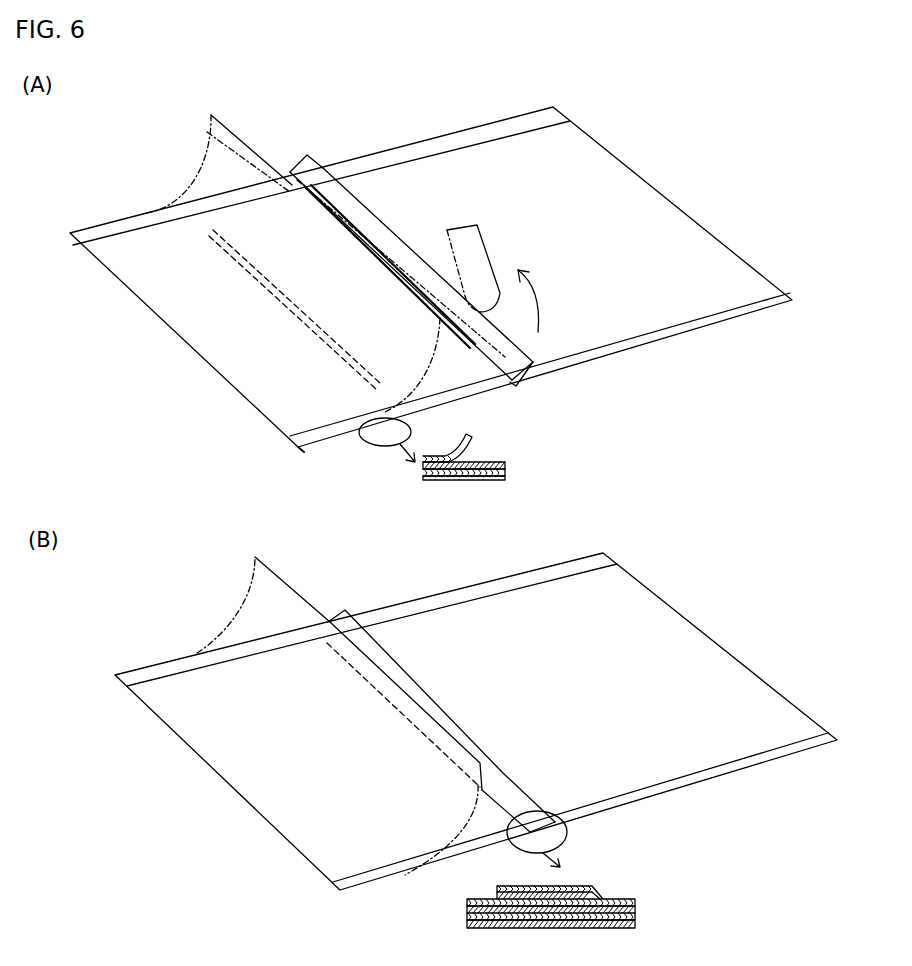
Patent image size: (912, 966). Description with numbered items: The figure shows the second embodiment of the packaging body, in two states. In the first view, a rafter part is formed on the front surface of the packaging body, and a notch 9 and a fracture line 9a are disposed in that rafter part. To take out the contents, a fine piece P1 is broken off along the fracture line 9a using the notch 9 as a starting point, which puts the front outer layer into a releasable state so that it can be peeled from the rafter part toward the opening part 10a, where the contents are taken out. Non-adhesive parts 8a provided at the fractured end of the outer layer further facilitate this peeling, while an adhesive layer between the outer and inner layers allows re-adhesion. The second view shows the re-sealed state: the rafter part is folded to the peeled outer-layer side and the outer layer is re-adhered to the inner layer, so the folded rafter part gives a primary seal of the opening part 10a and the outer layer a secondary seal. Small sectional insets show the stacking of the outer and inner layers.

The non-adhesive parts 8a is at (228, 128).
The notch 9 is at (513, 383).
The fracture line 9a is at (488, 353).
The opening part 10a is at (353, 241).
The fine piece P1 is at (465, 225).